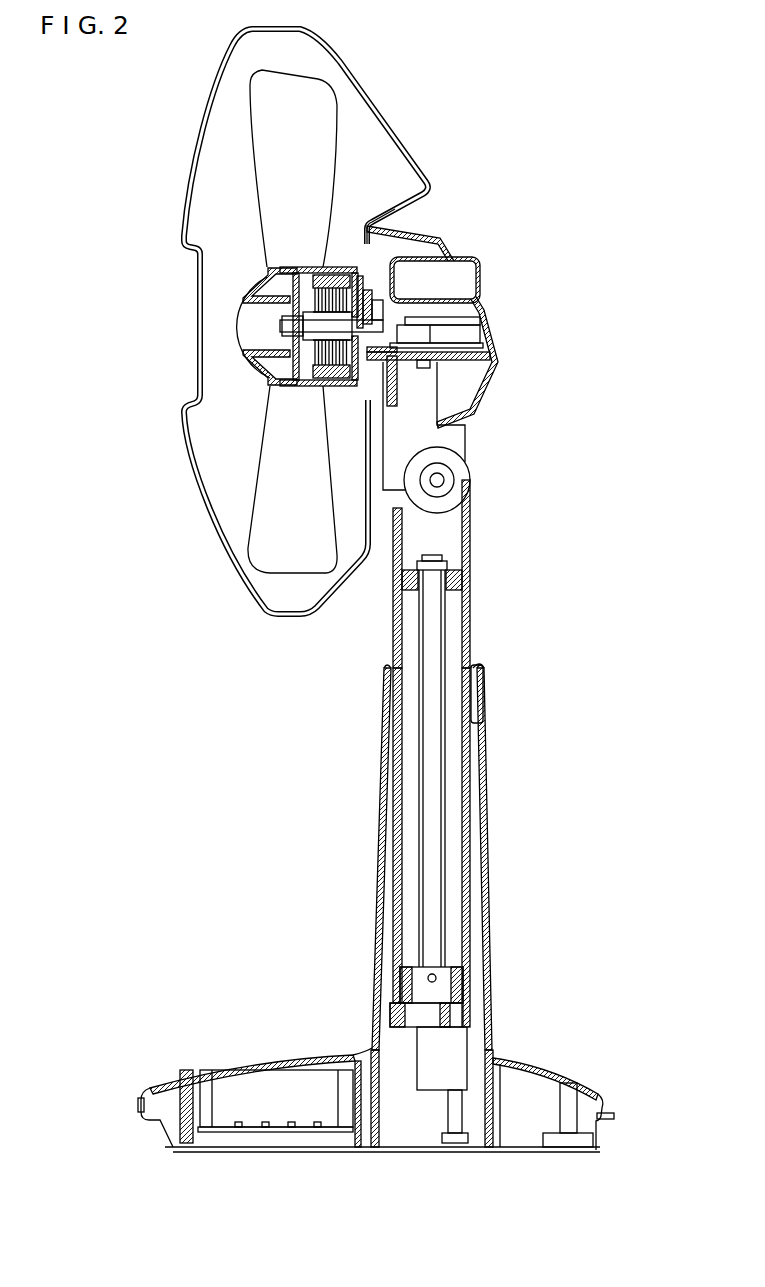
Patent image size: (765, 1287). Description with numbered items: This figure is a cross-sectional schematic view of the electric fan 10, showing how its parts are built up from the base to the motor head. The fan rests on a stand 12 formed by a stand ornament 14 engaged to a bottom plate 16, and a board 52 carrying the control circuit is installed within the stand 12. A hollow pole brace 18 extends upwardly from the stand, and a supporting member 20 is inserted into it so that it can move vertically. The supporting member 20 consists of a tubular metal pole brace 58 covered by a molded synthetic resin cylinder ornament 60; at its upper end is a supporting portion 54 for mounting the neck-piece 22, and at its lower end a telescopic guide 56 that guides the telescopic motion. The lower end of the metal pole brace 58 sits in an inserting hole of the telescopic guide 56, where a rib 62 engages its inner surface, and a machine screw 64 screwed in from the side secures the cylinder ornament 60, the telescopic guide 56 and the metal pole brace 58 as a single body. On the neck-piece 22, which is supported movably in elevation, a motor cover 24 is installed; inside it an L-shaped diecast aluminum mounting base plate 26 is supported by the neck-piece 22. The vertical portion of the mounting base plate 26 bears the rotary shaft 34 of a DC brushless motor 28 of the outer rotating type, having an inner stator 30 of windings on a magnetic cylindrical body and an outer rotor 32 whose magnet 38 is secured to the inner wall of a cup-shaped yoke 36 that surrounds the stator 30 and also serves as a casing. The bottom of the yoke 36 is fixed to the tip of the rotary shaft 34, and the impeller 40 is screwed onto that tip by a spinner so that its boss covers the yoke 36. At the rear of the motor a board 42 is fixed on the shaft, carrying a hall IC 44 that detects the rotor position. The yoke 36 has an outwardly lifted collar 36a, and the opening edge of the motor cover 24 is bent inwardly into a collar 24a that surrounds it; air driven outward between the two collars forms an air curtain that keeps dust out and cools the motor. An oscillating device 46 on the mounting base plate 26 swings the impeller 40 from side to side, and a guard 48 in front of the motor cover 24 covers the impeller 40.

The electric fan 10 is at (290, 704).
The stand 12 is at (534, 1049).
The stand ornament 14 is at (253, 1063).
The bottom plate 16 is at (282, 1147).
The pole brace 18 is at (486, 848).
The supporting member 20 is at (474, 640).
The neck-piece 22 is at (457, 440).
The motor cover 24 is at (483, 310).
The collar 24a is at (328, 262).
The mounting base plate 26 is at (470, 362).
The DC brushless motor 28 is at (277, 385).
The inner stator 30 is at (308, 370).
The outer rotor 32 is at (275, 286).
The rotary shaft 34 is at (292, 321).
The yoke 36 is at (268, 380).
The collar 36a is at (330, 272).
The magnet 38 is at (318, 384).
The impeller 40 is at (263, 183).
The board 42 is at (372, 295).
The hall IC 44 is at (370, 275).
The oscillating device 46 is at (465, 333).
The guard 48 is at (415, 155).
The board 52 is at (283, 1127).
The supporting portion 54 is at (472, 549).
The telescopic guide 56 is at (392, 1005).
The metal pole brace 58 is at (420, 814).
The cylinder ornament 60 is at (398, 775).
The rib 62 is at (437, 1023).
The machine screw 64 is at (434, 974).